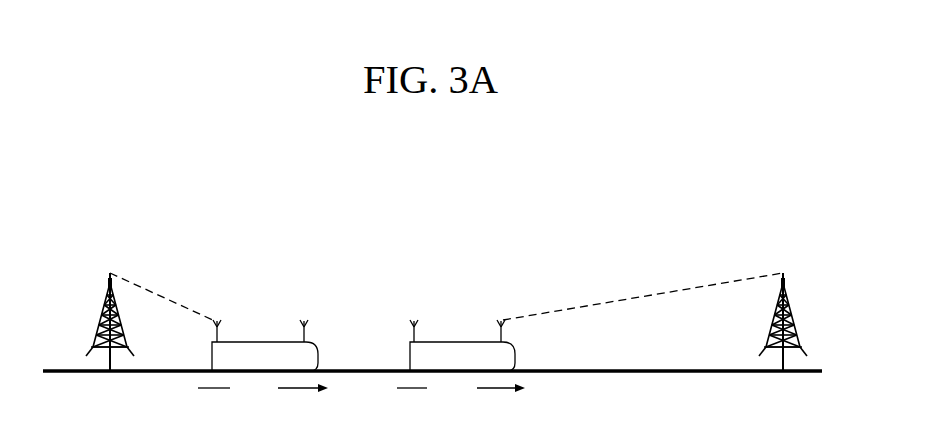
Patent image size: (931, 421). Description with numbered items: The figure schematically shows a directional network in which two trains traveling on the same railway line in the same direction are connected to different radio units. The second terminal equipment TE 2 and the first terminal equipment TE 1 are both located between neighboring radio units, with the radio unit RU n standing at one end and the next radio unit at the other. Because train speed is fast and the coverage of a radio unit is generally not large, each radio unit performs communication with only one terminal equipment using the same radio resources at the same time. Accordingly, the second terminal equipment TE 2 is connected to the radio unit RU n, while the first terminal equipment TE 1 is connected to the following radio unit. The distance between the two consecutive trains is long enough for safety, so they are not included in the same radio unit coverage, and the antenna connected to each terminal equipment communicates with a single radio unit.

The radio unit n RU n is at (110, 305).
The first terminal equipment TE 1 is at (462, 345).
The second terminal equipment TE 2 is at (265, 345).